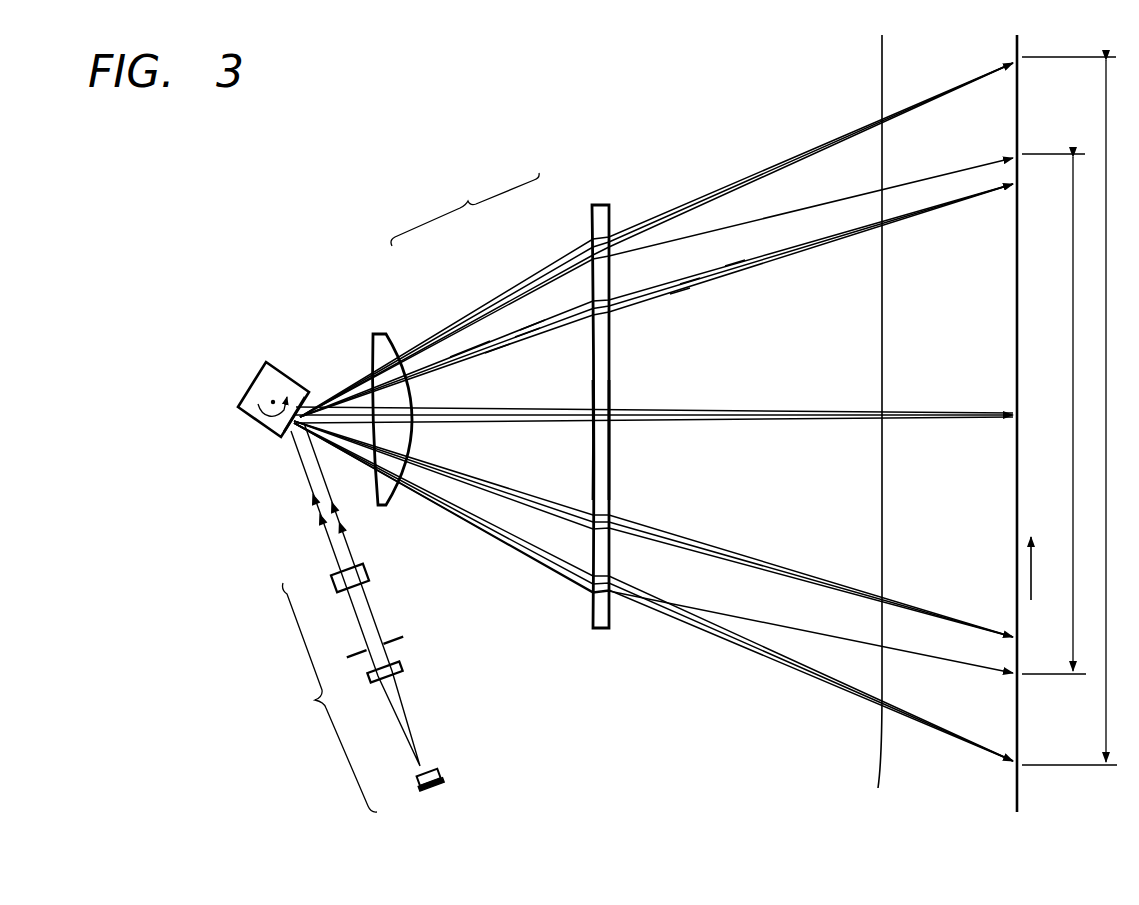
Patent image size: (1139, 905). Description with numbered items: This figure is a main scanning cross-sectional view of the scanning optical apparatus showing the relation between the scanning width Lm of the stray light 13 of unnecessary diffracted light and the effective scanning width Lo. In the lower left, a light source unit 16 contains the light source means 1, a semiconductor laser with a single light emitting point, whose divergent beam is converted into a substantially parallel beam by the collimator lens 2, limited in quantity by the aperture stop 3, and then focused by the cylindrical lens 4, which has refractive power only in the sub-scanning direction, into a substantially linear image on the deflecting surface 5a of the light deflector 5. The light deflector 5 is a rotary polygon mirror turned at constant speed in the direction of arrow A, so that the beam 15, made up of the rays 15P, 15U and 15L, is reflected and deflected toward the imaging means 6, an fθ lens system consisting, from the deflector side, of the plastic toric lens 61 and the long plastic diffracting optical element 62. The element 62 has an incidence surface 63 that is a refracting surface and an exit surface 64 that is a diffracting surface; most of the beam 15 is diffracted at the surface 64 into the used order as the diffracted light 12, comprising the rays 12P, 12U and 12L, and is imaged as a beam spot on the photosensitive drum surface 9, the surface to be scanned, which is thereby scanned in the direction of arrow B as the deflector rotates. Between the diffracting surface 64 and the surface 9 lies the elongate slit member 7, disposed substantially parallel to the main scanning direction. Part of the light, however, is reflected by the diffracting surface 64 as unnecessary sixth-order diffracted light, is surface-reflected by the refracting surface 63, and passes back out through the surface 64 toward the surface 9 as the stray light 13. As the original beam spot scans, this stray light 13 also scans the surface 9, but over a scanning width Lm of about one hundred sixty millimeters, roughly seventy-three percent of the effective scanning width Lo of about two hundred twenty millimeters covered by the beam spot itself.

The light source means 1 is at (417, 782).
The collimator lens 2 is at (368, 680).
The aperture stop 3 is at (350, 654).
The cylindrical lens 4 is at (335, 587).
The light deflector 5 is at (263, 433).
The deflecting surface 5a is at (296, 435).
The imaging means 6 is at (465, 209).
The toric lens 61 is at (378, 333).
The long diffracting optical element 62 is at (591, 207).
The incidence surface 63 is at (593, 626).
The exit surface 64 is at (609, 627).
The slit member 7 is at (881, 88).
The surface to be scanned 9 is at (1020, 717).
The diffracted light used 12 is at (636, 299).
The upper ray of diffracted light used 12U is at (730, 266).
The principal ray of diffracted light used 12P is at (685, 283).
The lower ray of diffracted light used 12L is at (680, 291).
The stray light 13 is at (780, 205).
The beam 15 is at (470, 340).
The upper ray of deflected beam 15U is at (533, 324).
The principal ray of deflected beam 15P is at (527, 339).
The lower ray of deflected beam 15L is at (493, 358).
The light source unit 16 is at (330, 697).
The rotation direction of light deflector A is at (252, 428).
The main scanning direction B is at (1042, 568).
The scanning width Lm is at (1054, 414).
The effective scanning width Lo is at (1075, 411).